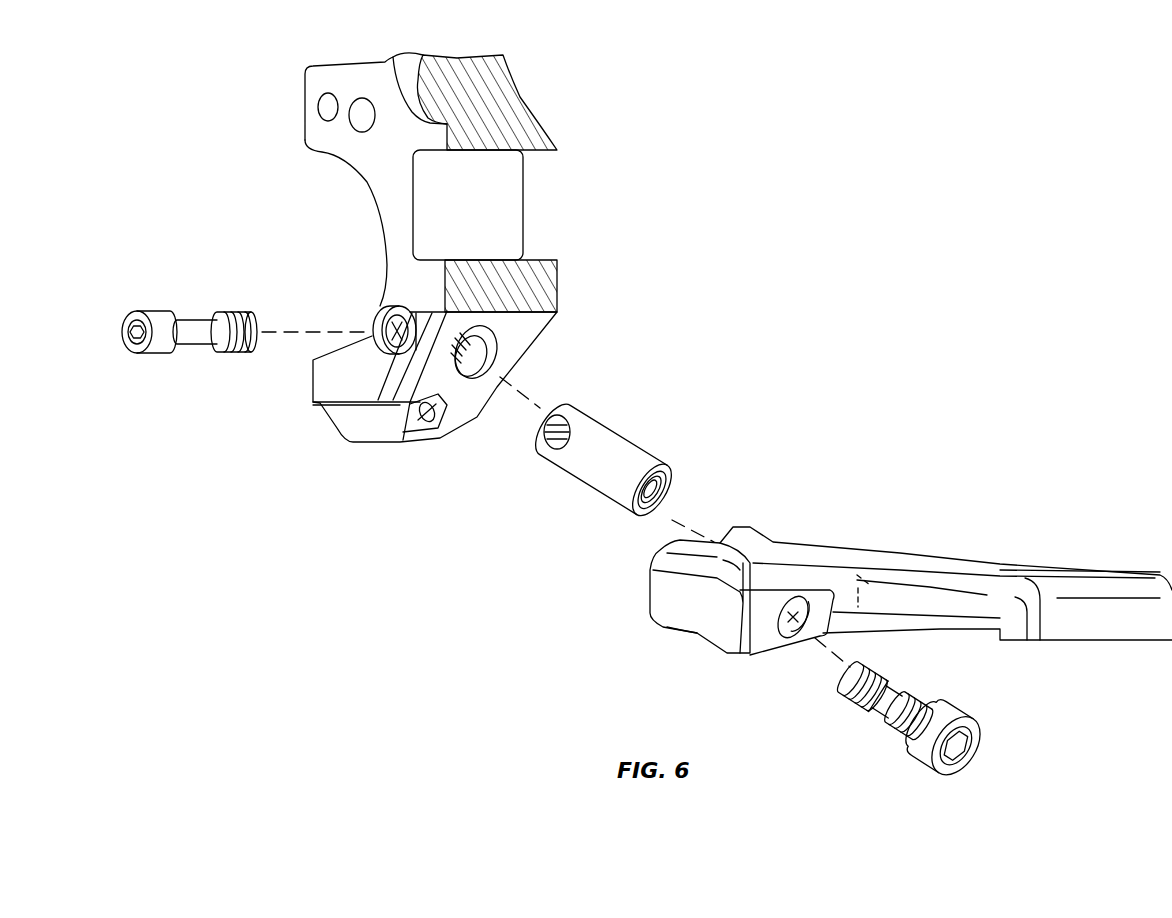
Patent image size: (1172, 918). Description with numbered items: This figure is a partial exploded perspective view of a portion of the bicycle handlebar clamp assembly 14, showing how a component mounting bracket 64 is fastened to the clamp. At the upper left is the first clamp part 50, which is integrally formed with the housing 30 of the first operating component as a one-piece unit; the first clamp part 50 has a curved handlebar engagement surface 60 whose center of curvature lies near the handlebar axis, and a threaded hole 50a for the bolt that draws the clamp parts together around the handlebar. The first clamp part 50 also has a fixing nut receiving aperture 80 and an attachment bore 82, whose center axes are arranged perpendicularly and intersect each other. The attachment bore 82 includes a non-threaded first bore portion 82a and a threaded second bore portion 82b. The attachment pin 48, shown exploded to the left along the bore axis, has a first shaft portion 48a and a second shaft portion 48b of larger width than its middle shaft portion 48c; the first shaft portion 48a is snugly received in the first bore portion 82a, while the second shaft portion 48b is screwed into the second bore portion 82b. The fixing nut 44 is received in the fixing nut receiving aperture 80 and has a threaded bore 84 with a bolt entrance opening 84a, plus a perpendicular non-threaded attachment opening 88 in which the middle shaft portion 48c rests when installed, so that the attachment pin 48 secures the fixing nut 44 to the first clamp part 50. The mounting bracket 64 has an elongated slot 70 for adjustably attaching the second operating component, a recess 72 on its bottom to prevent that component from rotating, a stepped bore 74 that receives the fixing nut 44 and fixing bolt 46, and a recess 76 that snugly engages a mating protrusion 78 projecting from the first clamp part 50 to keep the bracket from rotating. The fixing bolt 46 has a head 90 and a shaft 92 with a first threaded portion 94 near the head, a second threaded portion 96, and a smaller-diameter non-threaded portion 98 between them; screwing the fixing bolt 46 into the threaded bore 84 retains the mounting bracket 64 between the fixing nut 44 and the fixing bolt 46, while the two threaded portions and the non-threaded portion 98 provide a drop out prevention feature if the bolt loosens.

The bicycle handlebar clamp assembly 14 is at (847, 128).
The housing 30 is at (538, 152).
The fixing nut 44 is at (627, 468).
The fixing bolt 46 is at (878, 731).
The attachment pin 48 is at (188, 339).
The first shaft portion 48a is at (162, 311).
The second shaft portion 48b is at (240, 312).
The middle shaft portion 48c is at (192, 346).
The first clamp part 50 is at (556, 352).
The threaded hole 50a is at (435, 428).
The curved handlebar engagement surface 60 is at (366, 188).
The component mounting bracket 64 is at (890, 599).
The elongated slot 70 is at (1072, 572).
The recess 72 is at (997, 633).
The bore 74 is at (791, 630).
The recess 76 is at (658, 556).
The protrusion 78 is at (520, 323).
The fixing nut receiving aperture 80 is at (490, 372).
The attachment bore 82 is at (368, 327).
The first bore portion 82a is at (385, 308).
The second bore portion 82b is at (506, 373).
The threaded bore 84 is at (652, 490).
The bolt entrance opening 84a is at (651, 490).
The attachment opening 88 is at (566, 458).
The head 90 is at (963, 720).
The shaft 92 is at (885, 700).
The first threaded portion 94 is at (908, 715).
The second threaded portion 96 is at (862, 686).
The non-threaded portion 98 is at (887, 701).